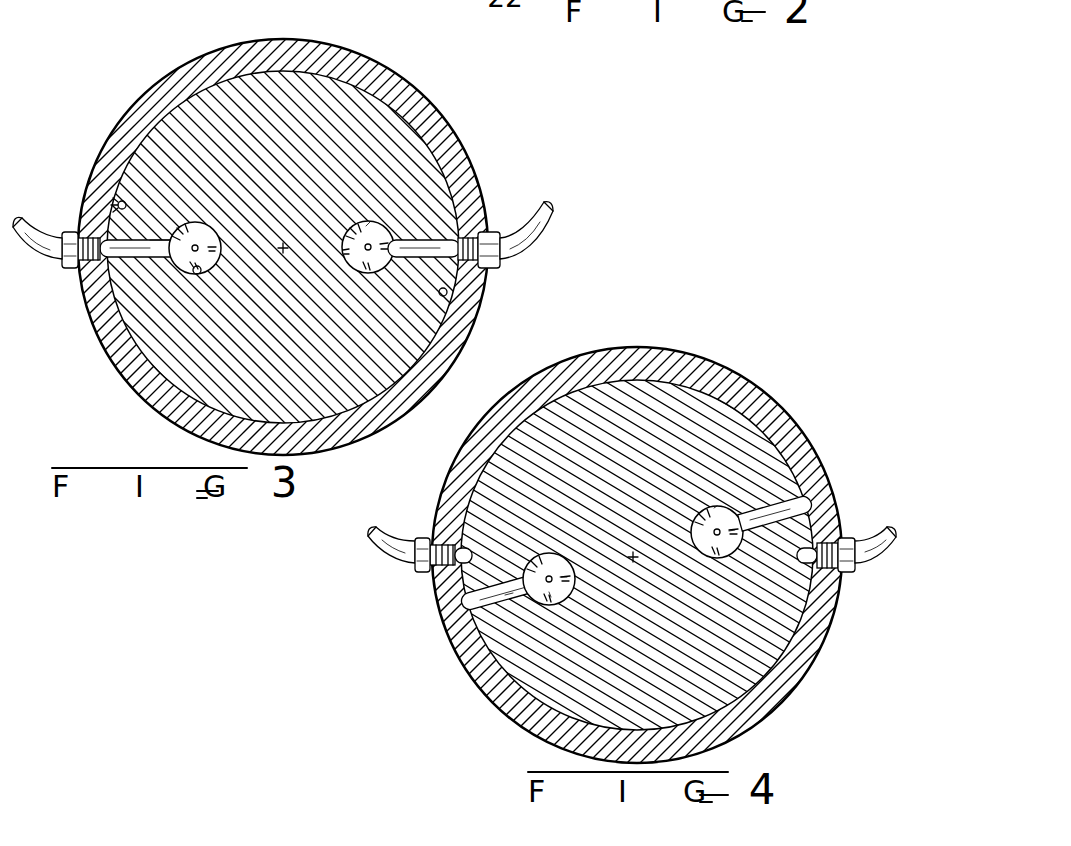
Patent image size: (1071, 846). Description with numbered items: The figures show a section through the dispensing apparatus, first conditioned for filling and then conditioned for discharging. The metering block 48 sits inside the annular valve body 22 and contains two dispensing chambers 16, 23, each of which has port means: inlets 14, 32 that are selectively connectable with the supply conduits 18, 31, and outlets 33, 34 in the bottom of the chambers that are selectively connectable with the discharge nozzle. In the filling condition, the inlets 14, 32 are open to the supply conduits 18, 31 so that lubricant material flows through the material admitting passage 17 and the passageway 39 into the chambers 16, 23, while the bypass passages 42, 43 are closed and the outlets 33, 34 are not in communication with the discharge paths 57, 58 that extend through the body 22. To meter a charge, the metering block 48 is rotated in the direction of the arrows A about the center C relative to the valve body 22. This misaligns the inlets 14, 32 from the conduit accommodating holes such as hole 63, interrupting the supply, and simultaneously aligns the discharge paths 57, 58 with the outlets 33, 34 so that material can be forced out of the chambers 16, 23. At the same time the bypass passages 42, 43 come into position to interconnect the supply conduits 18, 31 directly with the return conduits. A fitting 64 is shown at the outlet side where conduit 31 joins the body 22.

In FIG. 3, the inlet 14 is at (116, 261).
In FIG. 4, the inlet 14 is at (484, 607).
In FIG. 3, the dispensing chamber 16 is at (200, 223).
In FIG. 4, the dispensing chamber 16 is at (577, 585).
In FIG. 3, the material admitting passage 17 is at (156, 237).
In FIG. 4, the material admitting passage 17 is at (511, 586).
In FIG. 3, the conduit 18 is at (46, 231).
In FIG. 4, the conduit 18 is at (391, 545).
In FIG. 3, the valve body 22 is at (334, 43).
In FIG. 4, the valve body 22 is at (731, 376).
In FIG. 3, the dispensing chamber 23 is at (363, 273).
In FIG. 4, the dispensing chamber 23 is at (722, 560).
In FIG. 3, the conduit 31 is at (556, 210).
In FIG. 4, the conduit 31 is at (874, 556).
In FIG. 3, the inlet 32 is at (441, 239).
In FIG. 4, the inlet 32 is at (784, 508).
In FIG. 3, the outlet 33 is at (220, 251).
In FIG. 4, the outlet 33 is at (561, 544).
In FIG. 3, the outlet 34 is at (342, 253).
In FIG. 4, the outlet 34 is at (681, 502).
In FIG. 3, the passageway 39 is at (440, 251).
In FIG. 4, the passageway 39 is at (779, 535).
In FIG. 3, the bypass passage 42 is at (127, 202).
In FIG. 4, the bypass passage 42 is at (469, 547).
In FIG. 3, the bypass passage 43 is at (438, 294).
In FIG. 4, the bypass passage 43 is at (795, 556).
In FIG. 3, the metering block 48 is at (256, 141).
In FIG. 4, the metering block 48 is at (604, 446).
In FIG. 3, the discharge path 57 is at (195, 275).
In FIG. 4, the discharge path 57 is at (552, 572).
In FIG. 3, the discharge path 58 is at (384, 220).
In FIG. 4, the discharge path 58 is at (714, 507).
In FIG. 3, the conduit accommodating hole 63 is at (75, 270).
In FIG. 4, the conduit accommodating hole 63 is at (430, 585).
In FIG. 3, the outlet fitting nut 64 is at (489, 232).
In FIG. 4, the outlet fitting nut 64 is at (833, 522).
In FIG. 3, the arrows A is at (325, 187).
In FIG. 3, the center C is at (283, 248).
In FIG. 4, the center C is at (633, 558).